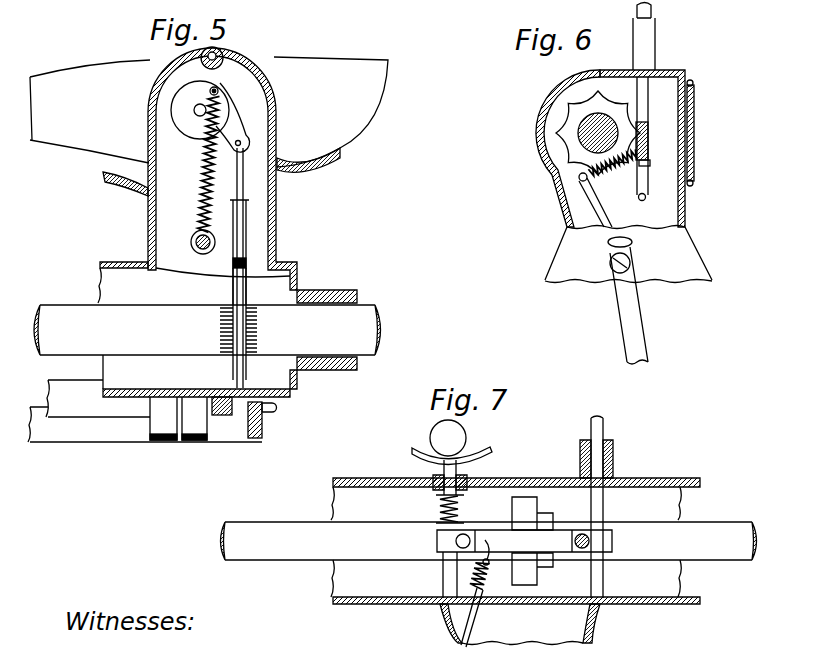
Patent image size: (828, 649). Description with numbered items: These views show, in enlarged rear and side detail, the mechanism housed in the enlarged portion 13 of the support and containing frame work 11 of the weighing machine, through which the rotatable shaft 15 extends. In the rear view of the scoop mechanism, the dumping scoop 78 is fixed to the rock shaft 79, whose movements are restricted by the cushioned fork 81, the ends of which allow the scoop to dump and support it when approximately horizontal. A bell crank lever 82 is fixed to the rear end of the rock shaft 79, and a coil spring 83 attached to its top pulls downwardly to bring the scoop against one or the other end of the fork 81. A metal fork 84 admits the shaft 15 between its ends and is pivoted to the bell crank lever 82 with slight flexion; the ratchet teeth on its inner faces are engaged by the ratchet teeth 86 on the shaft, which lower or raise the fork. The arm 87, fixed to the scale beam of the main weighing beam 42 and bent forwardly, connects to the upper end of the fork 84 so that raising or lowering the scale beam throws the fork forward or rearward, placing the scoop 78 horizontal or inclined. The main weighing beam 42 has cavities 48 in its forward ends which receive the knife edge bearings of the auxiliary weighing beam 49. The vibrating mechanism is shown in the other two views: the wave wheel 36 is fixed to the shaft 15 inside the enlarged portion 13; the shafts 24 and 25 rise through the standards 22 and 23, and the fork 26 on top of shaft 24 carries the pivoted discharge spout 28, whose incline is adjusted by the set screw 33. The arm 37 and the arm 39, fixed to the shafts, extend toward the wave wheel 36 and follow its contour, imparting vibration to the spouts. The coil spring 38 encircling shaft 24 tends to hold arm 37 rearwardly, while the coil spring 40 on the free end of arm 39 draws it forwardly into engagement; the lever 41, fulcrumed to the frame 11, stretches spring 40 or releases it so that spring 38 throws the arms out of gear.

In FIG. 5, the support and containing frame work 11 is at (278, 233).
In FIG. 6, the support and containing frame work 11 is at (628, 254).
In FIG. 5, the enlarged portion 13 is at (101, 266).
In FIG. 6, the enlarged portion 13 is at (560, 98).
In FIG. 7, the enlarged portion 13 is at (334, 600).
In FIG. 5, the rotatable shaft 15 is at (207, 330).
In FIG. 6, the rotatable shaft 15 is at (590, 140).
In FIG. 7, the rotatable shaft 15 is at (489, 541).
In FIG. 7, the standard 22 is at (457, 468).
In FIG. 7, the standard 23 is at (605, 507).
In FIG. 7, the shaft 24 is at (444, 578).
In FIG. 6, the shaft 25 is at (648, 93).
In FIG. 7, the shaft 25 is at (604, 500).
In FIG. 7, the fork 26 is at (492, 452).
In FIG. 6, the discharge spout 28 is at (644, 48).
In FIG. 7, the set screw 33 is at (448, 438).
In FIG. 6, the wave wheel 36 is at (590, 136).
In FIG. 7, the wave wheel 36 is at (512, 505).
In FIG. 6, the arm 37 is at (648, 128).
In FIG. 7, the arm 37 is at (438, 540).
In FIG. 7, the coil spring 38 is at (439, 508).
In FIG. 6, the arm 39 is at (650, 140).
In FIG. 7, the arm 39 is at (600, 540).
In FIG. 6, the coil spring 40 is at (615, 185).
In FIG. 7, the coil spring 40 is at (487, 586).
In FIG. 6, the lever 41 is at (633, 310).
In FIG. 7, the lever 41 is at (473, 622).
In FIG. 5, the main weighing beam 42 is at (139, 410).
In FIG. 5, the cavities 48 is at (252, 425).
In FIG. 5, the auxiliary weighing beam 49 is at (145, 424).
In FIG. 5, the dumping scoop 78 is at (209, 112).
In FIG. 5, the rock shaft 79 is at (198, 113).
In FIG. 5, the cushioned fork 81 is at (120, 190).
In FIG. 5, the bell crank lever 82 is at (222, 101).
In FIG. 5, the coil spring 83 is at (205, 186).
In FIG. 5, the metal fork 84 is at (252, 383).
In FIG. 5, the ratchet teeth 86 is at (255, 333).
In FIG. 5, the arm 87 is at (232, 292).